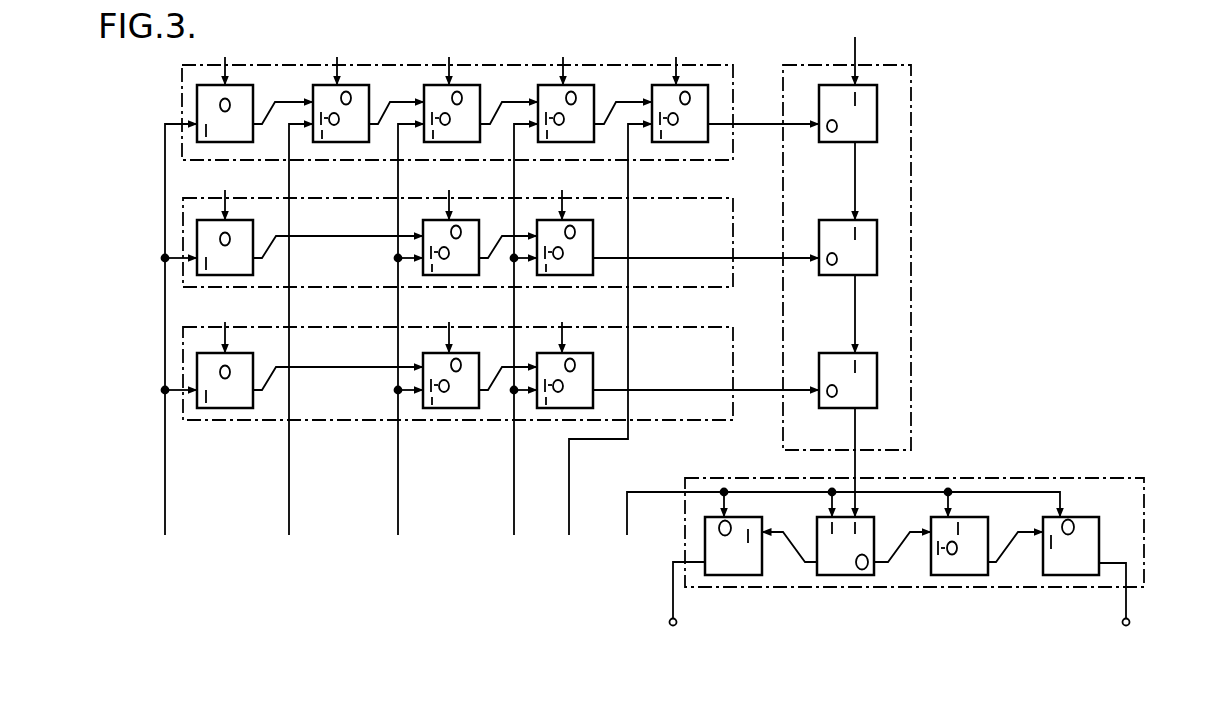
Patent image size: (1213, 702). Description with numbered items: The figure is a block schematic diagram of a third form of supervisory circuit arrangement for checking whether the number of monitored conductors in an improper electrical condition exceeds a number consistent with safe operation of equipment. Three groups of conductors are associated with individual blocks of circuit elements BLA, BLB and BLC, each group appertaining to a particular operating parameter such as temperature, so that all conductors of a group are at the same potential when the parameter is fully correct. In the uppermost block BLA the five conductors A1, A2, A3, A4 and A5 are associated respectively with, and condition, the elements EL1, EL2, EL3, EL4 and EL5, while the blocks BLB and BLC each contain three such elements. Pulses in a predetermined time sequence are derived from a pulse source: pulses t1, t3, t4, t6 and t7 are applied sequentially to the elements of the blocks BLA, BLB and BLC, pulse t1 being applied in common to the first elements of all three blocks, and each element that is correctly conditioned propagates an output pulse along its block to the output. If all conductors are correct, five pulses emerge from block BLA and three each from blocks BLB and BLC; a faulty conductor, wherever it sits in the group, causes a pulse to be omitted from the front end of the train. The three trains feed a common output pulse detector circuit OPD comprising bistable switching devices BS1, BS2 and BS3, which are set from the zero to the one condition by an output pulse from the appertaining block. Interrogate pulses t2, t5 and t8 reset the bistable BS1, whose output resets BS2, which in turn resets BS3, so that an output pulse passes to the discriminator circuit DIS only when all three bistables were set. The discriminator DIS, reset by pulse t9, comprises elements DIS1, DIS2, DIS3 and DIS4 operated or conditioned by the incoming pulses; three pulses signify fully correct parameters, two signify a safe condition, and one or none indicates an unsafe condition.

The block of circuit elements BLA is at (500, 63).
The block of circuit elements BLB is at (190, 203).
The block of circuit elements BLC is at (188, 343).
The output pulse detector circuit OPD is at (911, 305).
The discriminator circuit DIS is at (1144, 497).
The element EL1 is at (252, 103).
The element EL2 is at (367, 103).
The element EL3 is at (476, 103).
The element EL4 is at (589, 103).
The element EL5 is at (697, 115).
The bistable switching device BS1 is at (868, 119).
The bistable switching device BS2 is at (870, 242).
The bistable switching device BS3 is at (868, 384).
The discriminator element DIS1 is at (740, 568).
The discriminator element DIS2 is at (843, 568).
The discriminator element DIS3 is at (960, 568).
The discriminator element DIS4 is at (1063, 568).
The conductor A1 is at (229, 59).
The conductor A2 is at (341, 59).
The conductor A3 is at (453, 59).
The conductor A4 is at (567, 59).
The conductor A5 is at (680, 59).
The pulse t1 is at (177, 348).
The pulse t2 is at (869, 58).
The pulse t3 is at (297, 348).
The pulse t4 is at (407, 348).
The pulse t5 is at (909, 46).
The pulse t6 is at (522, 348).
The pulse t7 is at (607, 348).
The pulse t8 is at (944, 46).
The pulse t9 is at (840, 531).